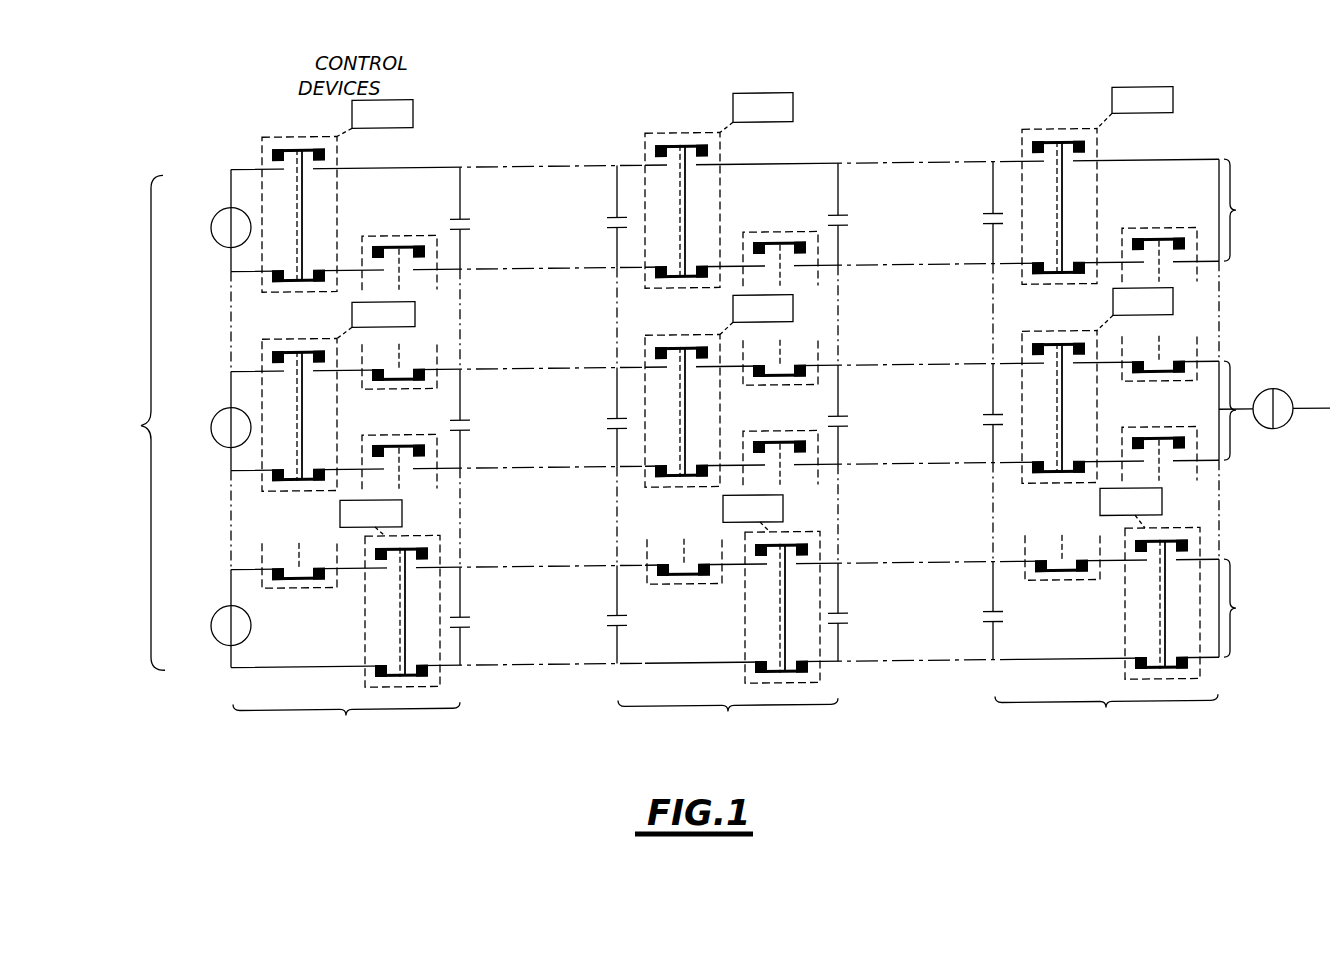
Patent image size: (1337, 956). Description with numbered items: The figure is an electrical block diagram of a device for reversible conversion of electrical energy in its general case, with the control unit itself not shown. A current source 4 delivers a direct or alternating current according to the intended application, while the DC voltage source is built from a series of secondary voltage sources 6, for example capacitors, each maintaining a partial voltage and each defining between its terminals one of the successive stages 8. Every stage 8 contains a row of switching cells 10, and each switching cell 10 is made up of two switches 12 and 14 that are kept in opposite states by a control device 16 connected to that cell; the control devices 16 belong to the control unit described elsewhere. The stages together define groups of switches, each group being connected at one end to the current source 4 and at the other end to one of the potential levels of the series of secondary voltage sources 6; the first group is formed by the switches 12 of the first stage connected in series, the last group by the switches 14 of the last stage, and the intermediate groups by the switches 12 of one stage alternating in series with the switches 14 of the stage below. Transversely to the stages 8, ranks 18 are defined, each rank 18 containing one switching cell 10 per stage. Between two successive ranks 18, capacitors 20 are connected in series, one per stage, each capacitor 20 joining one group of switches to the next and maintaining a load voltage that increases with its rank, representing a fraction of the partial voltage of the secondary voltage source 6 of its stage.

The current source 4 is at (1284, 396).
The secondary voltage source 6 is at (213, 606).
The stage 8 is at (1245, 408).
The switching cell 10 is at (258, 138).
The switch 12 is at (303, 281).
The switch 14 is at (678, 348).
The control device 16 is at (415, 112).
The rank 18 is at (725, 734).
The capacitor 20 is at (975, 623).